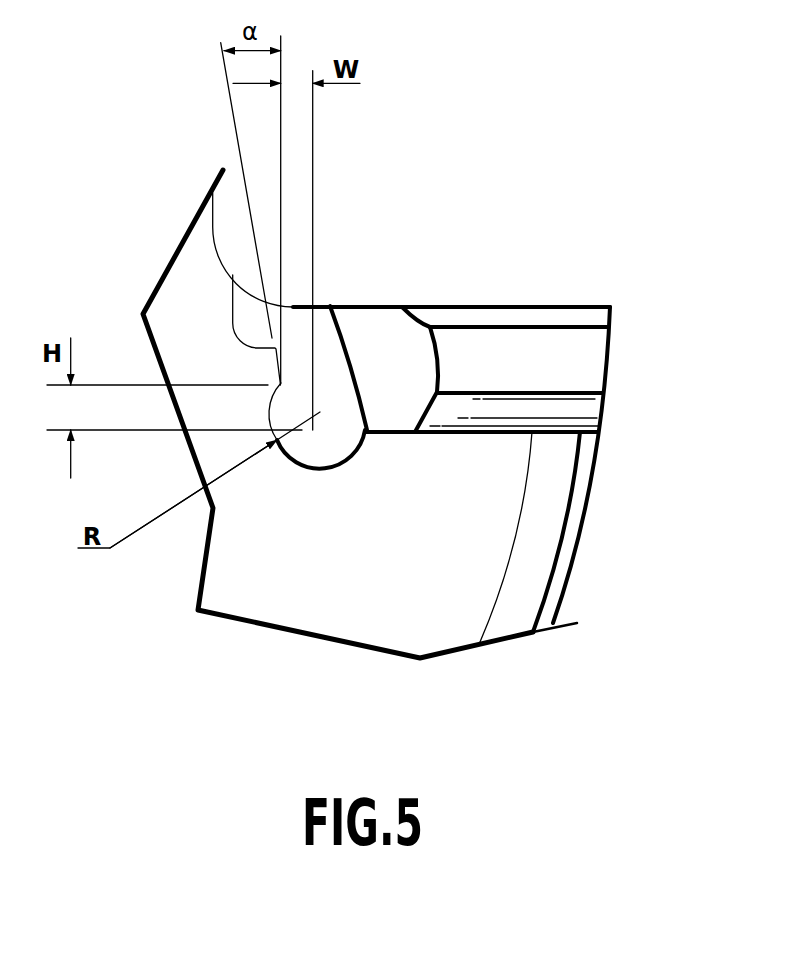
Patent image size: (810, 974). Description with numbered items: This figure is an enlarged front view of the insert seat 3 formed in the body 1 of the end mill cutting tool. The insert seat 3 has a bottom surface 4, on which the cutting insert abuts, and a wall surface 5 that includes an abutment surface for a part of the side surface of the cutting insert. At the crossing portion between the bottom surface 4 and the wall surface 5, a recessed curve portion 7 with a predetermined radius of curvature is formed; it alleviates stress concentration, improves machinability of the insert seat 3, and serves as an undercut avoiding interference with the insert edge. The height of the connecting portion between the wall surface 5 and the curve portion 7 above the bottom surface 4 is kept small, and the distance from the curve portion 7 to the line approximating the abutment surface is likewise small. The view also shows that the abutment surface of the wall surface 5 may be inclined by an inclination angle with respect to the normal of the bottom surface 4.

The body 1 is at (467, 518).
The insert seat 3 is at (510, 337).
The bottom surface 4 is at (390, 432).
The wall surface 5 is at (280, 353).
The curve portion 7 is at (305, 460).